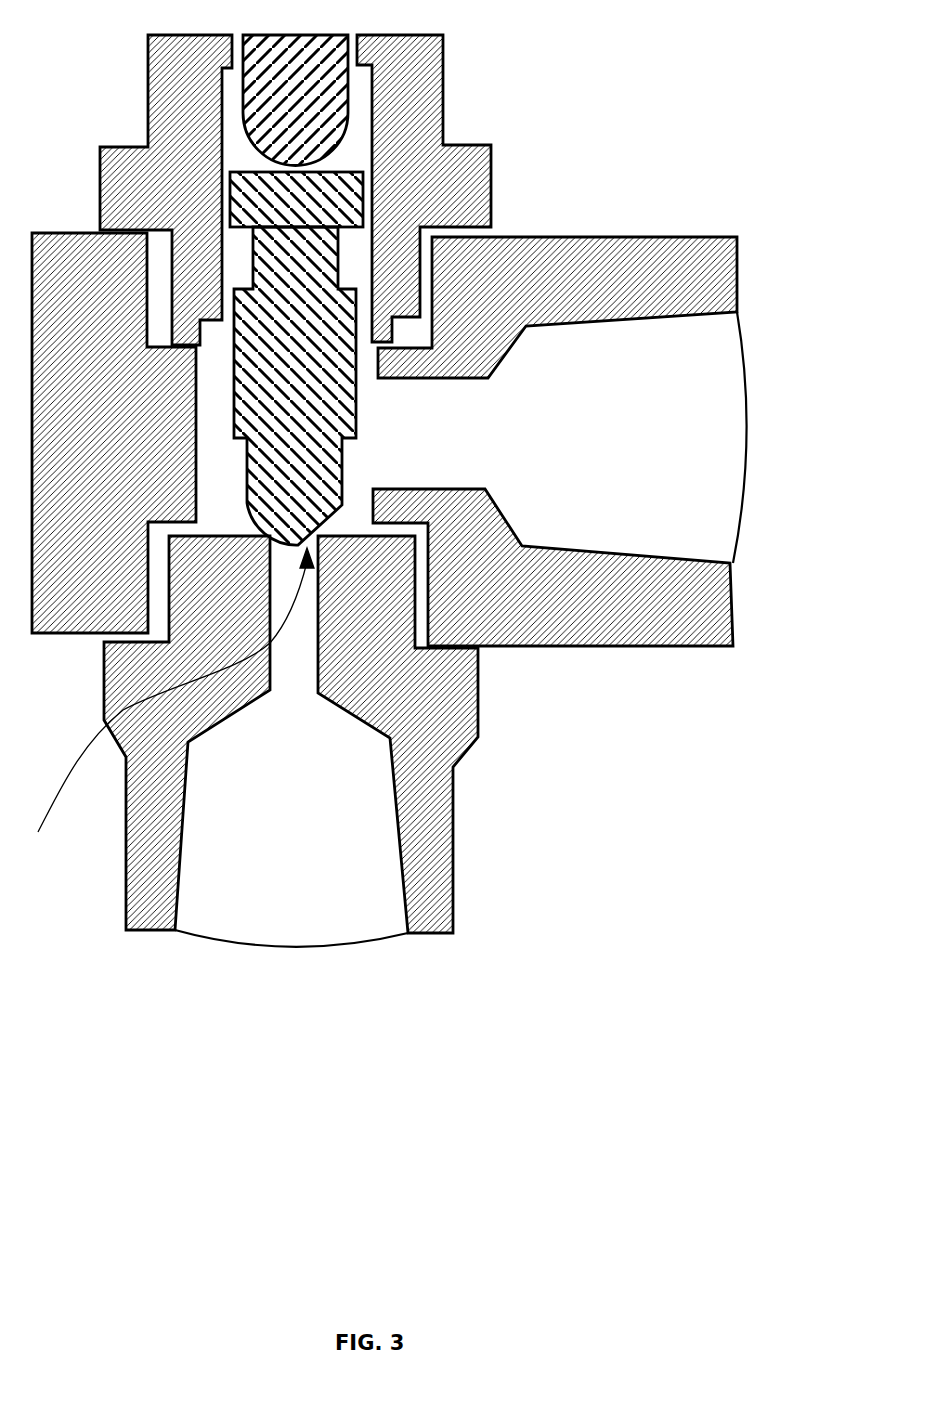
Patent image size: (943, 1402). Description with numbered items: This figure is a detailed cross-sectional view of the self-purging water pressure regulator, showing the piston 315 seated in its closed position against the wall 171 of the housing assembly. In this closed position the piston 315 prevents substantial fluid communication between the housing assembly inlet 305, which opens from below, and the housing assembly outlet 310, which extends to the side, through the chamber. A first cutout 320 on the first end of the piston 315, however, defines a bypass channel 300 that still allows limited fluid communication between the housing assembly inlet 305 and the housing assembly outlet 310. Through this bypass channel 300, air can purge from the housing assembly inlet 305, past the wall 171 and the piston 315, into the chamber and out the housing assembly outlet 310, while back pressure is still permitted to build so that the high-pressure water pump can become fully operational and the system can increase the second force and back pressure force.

The wall 171 is at (220, 537).
The bypass channel 300 is at (166, 717).
The housing assembly inlet 305 is at (400, 940).
The housing assembly outlet 310 is at (708, 473).
The piston 315 is at (227, 192).
The first cutout 320 is at (337, 505).